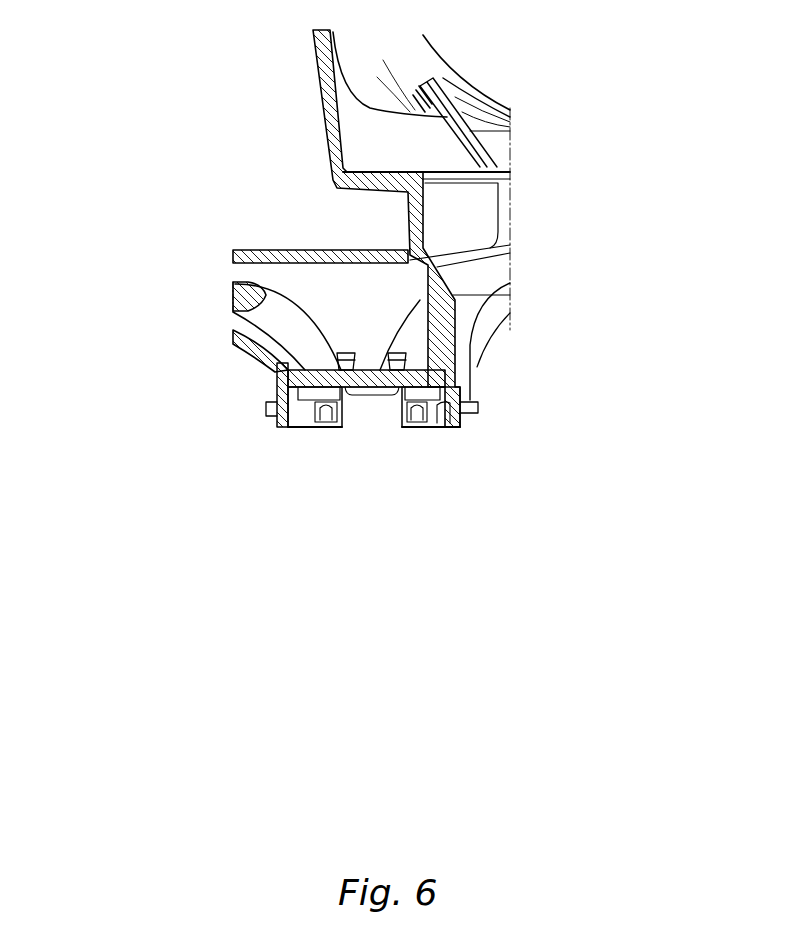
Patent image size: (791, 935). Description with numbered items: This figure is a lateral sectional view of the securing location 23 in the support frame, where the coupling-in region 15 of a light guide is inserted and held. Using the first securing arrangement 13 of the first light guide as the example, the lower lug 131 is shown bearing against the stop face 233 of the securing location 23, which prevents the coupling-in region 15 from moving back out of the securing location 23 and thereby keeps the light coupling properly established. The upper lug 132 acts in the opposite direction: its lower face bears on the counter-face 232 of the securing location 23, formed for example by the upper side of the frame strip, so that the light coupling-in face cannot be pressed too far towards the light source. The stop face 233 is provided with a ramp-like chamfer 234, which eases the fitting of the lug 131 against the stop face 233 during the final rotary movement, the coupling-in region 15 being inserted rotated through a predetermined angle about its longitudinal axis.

The first securing arrangement 13 is at (338, 310).
The coupling-in region 15 is at (300, 323).
The lower lug 131 is at (325, 427).
The upper lug 132 is at (347, 350).
The securing location 23 is at (522, 368).
The counter-face 232 is at (372, 368).
The stop face 233 is at (328, 396).
The ramp-like chamfer 234 is at (290, 422).